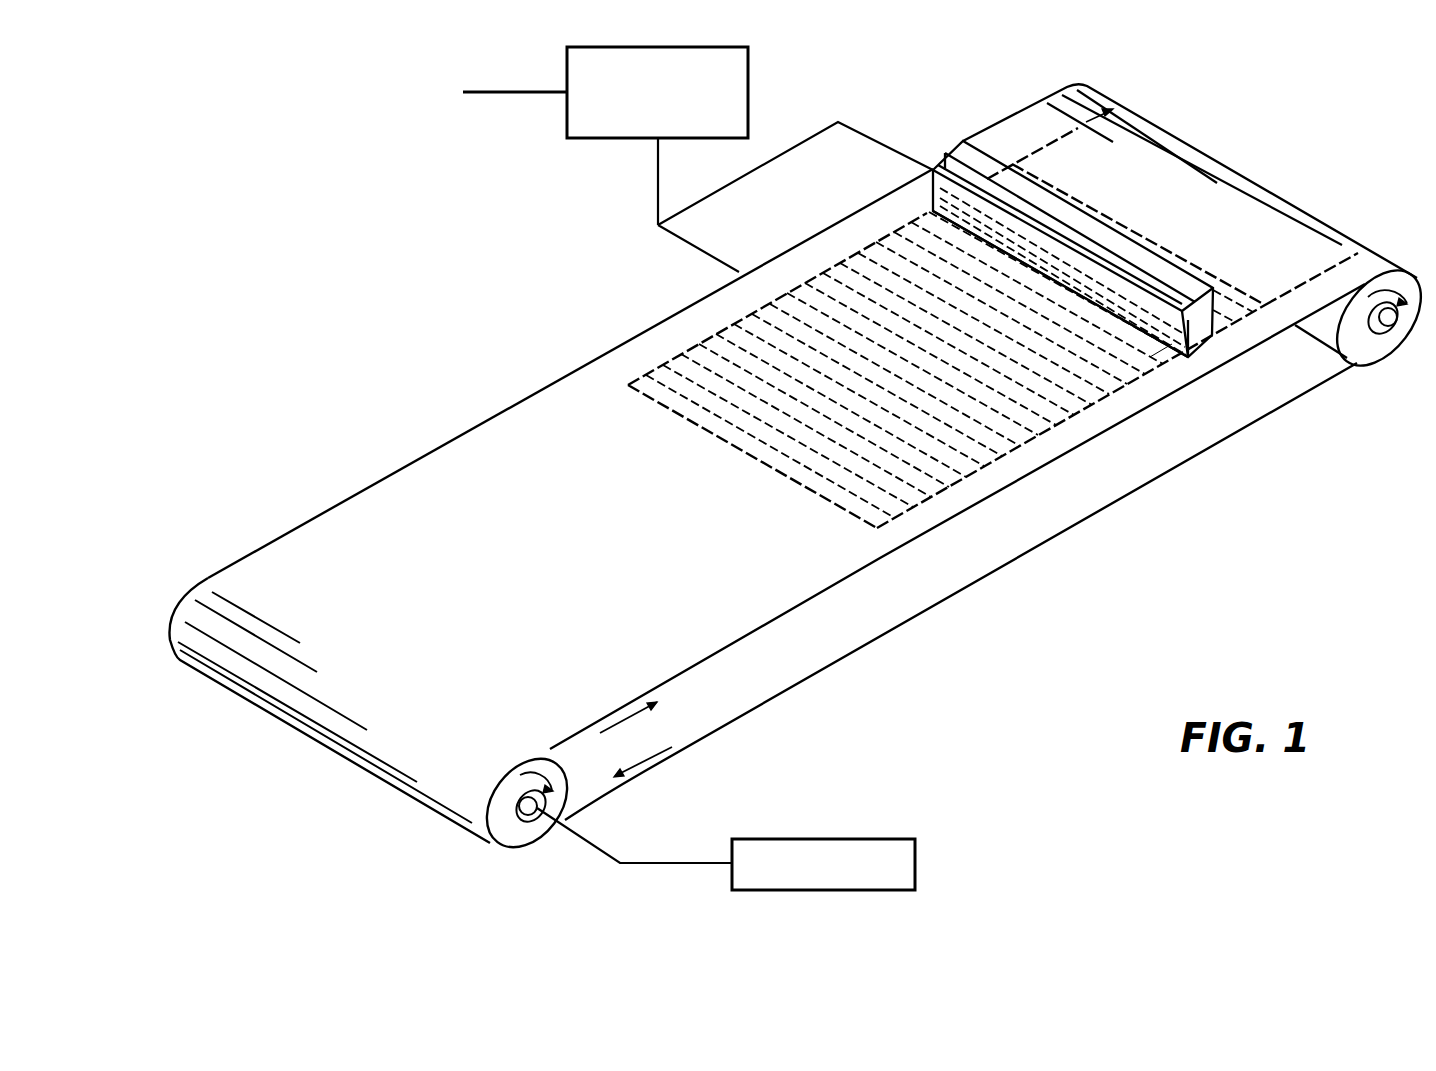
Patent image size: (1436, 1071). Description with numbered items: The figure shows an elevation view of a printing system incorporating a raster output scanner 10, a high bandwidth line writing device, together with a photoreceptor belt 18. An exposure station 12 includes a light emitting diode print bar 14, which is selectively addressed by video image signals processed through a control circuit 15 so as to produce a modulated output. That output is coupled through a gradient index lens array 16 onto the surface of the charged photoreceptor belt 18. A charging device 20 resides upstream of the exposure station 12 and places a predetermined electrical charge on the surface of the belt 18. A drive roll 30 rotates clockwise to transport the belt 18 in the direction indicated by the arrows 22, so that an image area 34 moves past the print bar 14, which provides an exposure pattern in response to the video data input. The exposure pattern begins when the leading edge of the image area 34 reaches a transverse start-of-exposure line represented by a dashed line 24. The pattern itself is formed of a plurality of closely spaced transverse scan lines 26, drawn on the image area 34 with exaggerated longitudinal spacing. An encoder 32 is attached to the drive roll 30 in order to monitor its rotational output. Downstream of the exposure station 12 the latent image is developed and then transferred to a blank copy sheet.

The raster output scanner 10 is at (928, 97).
The exposure station 12 is at (1192, 360).
The light emitting diode print bar 14 is at (937, 167).
The control circuit 15 is at (747, 92).
The gradient index lens array 16 is at (930, 203).
The photoreceptor belt 18 is at (516, 430).
The charging device 20 is at (1203, 316).
The arrows 22 is at (627, 726).
The dashed line 24 is at (1158, 347).
The transverse scan lines 26 is at (855, 270).
The drive roll 30 is at (513, 835).
The encoder 32 is at (915, 857).
The image area 34 is at (905, 222).